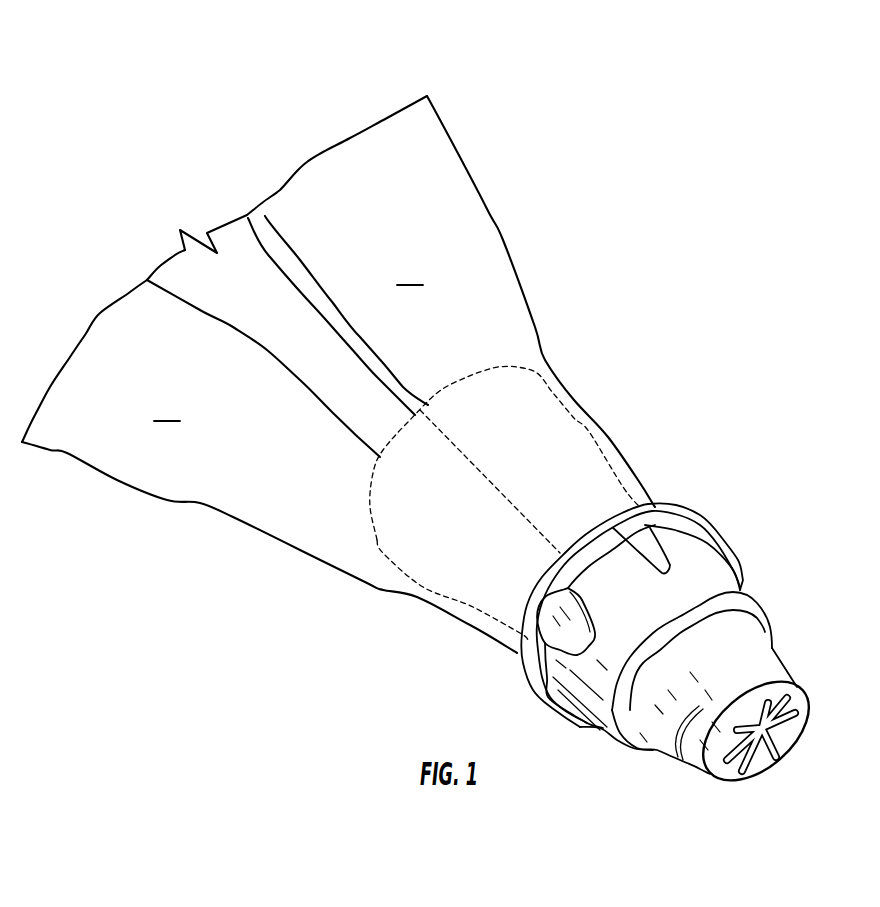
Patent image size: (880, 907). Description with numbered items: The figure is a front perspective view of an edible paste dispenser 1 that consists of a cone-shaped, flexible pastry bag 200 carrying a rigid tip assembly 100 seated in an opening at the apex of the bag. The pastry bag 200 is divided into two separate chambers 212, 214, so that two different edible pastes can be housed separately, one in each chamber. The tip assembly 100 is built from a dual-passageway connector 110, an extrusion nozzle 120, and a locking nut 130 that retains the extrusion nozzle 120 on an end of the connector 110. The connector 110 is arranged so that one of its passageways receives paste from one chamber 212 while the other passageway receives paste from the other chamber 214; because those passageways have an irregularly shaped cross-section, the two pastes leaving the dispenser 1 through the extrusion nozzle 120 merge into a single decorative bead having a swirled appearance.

The edible paste dispenser 1 is at (277, 23).
The pastry bag 200 is at (399, 150).
The chamber 214 is at (480, 272).
The chamber 212 is at (258, 482).
The tip assembly 100 is at (733, 357).
The dual-passageway connector 110 is at (555, 492).
The locking nut 130 is at (692, 563).
The extrusion nozzle 120 is at (738, 643).